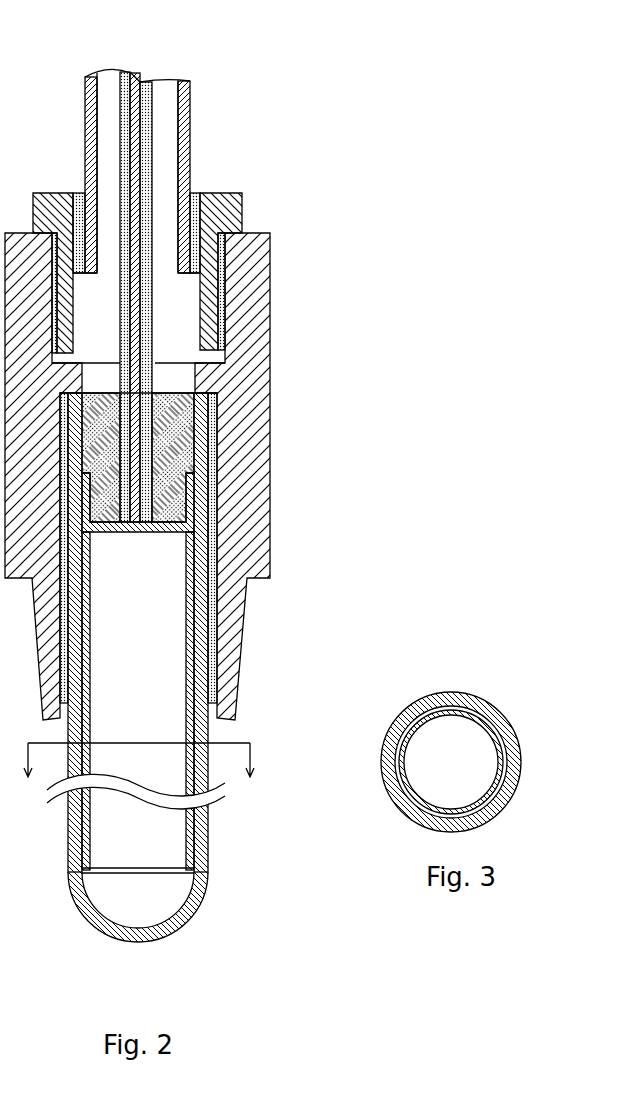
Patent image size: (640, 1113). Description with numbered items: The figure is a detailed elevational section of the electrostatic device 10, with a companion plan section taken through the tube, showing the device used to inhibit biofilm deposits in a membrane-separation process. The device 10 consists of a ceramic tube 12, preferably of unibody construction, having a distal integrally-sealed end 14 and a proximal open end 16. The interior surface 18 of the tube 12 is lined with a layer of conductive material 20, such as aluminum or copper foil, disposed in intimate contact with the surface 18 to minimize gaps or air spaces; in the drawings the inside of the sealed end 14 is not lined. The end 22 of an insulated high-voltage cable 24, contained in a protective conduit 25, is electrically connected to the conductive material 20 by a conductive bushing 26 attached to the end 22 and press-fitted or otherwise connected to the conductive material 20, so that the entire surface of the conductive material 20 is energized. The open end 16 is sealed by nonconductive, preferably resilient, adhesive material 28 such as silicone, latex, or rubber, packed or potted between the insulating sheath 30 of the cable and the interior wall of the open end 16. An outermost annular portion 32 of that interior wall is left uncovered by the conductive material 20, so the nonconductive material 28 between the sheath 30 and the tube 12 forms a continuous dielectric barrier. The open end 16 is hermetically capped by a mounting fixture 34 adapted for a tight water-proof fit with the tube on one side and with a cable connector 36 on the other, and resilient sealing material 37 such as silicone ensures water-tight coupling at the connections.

In FIG. 2, the electrostatic device 10 is at (304, 184).
In FIG. 2, the ceramic tube 12 is at (179, 697).
In FIG. 3, the ceramic tube 12 is at (493, 707).
In FIG. 2, the sealed end 14 is at (128, 943).
In FIG. 2, the open end 16 is at (195, 393).
In FIG. 2, the interior surface 18 is at (163, 897).
In FIG. 2, the conductive material 20 is at (88, 678).
In FIG. 3, the conductive material 20 is at (478, 721).
In FIG. 2, the end of cable 22 is at (162, 531).
In FIG. 2, the high-voltage cable 24 is at (189, 140).
In FIG. 2, the protective conduit 25 is at (190, 142).
In FIG. 2, the conductive bushing 26 is at (123, 531).
In FIG. 2, the nonconductive adhesive material 28 is at (190, 490).
In FIG. 2, the insulating sheath 30 is at (152, 81).
In FIG. 2, the outermost annular portion 32 is at (195, 428).
In FIG. 2, the mounting fixture 34 is at (270, 275).
In FIG. 2, the cable connector 36 is at (242, 193).
In FIG. 2, the sealing material 37 is at (80, 193).